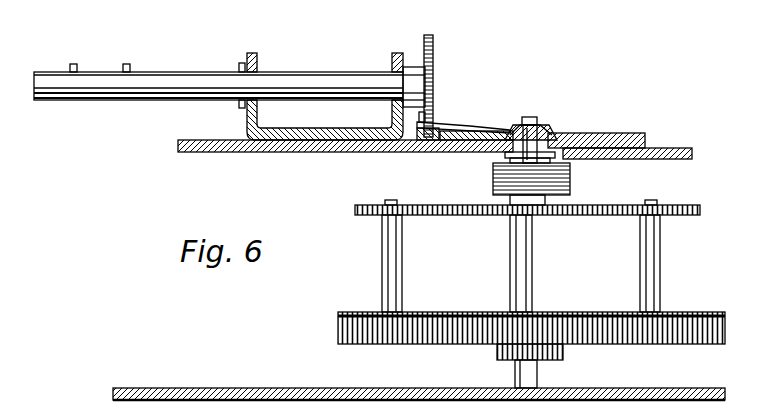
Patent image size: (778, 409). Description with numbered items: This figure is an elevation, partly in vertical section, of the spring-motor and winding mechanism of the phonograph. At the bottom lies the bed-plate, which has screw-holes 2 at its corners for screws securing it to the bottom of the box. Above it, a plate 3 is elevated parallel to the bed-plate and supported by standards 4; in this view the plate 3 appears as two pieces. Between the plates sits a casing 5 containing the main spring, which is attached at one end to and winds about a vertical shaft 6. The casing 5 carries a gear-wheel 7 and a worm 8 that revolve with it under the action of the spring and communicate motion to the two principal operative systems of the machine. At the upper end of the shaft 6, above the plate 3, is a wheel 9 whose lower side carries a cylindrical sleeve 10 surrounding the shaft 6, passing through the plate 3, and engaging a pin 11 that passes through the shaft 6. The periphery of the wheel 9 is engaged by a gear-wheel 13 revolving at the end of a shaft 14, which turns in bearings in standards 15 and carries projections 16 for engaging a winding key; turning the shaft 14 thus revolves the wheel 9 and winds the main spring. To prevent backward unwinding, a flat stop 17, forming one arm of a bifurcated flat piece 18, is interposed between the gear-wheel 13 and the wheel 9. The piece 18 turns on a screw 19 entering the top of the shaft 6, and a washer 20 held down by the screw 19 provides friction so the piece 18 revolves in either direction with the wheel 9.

The screw-holes 2 is at (419, 398).
The plate 3 is at (228, 152).
The standards 4 is at (527, 207).
The casing 5 is at (662, 258).
The vertical shaft 6 is at (552, 132).
The gear-wheel 7 is at (700, 312).
The worm 8 is at (570, 180).
The wheel 9 is at (605, 133).
The sleeve 10 is at (510, 162).
The pin 11 is at (505, 156).
The gear-wheel 13 is at (433, 37).
The shaft 14 is at (135, 100).
The standards 15 is at (255, 53).
The projections 16 is at (74, 64).
The stop 17 is at (440, 122).
The bifurcated flat piece of metal 18 is at (510, 125).
The screw 19 is at (532, 117).
The washer 20 is at (545, 126).